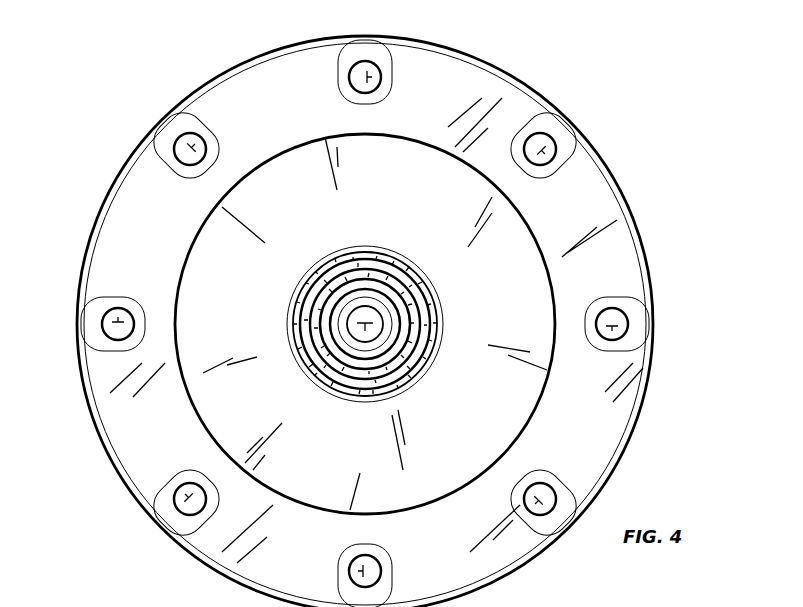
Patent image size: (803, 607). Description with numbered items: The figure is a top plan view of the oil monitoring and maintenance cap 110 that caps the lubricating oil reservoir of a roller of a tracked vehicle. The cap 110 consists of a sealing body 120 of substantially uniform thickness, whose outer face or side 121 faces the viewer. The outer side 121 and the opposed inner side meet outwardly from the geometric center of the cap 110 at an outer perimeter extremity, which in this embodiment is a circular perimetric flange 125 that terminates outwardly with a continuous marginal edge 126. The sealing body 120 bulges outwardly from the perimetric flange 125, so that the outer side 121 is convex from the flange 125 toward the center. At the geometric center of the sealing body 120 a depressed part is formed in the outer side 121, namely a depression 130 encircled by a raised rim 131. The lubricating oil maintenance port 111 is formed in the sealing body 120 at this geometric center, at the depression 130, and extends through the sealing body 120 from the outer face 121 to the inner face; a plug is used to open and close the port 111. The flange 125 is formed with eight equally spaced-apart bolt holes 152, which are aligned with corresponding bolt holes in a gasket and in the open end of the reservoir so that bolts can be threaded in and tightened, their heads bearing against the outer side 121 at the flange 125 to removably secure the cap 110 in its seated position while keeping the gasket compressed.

The oil monitoring and maintenance cap 110 is at (522, 80).
The sealing body 120 is at (540, 240).
The outer face or side 121 is at (503, 350).
The perimetric flange 125 is at (580, 403).
The continuous marginal edge 126 is at (642, 410).
The depression 130 is at (392, 282).
The raised rim 131 is at (445, 322).
The lubricating oil maintenance port 111 is at (365, 328).
The bolt holes 152 is at (373, 70).